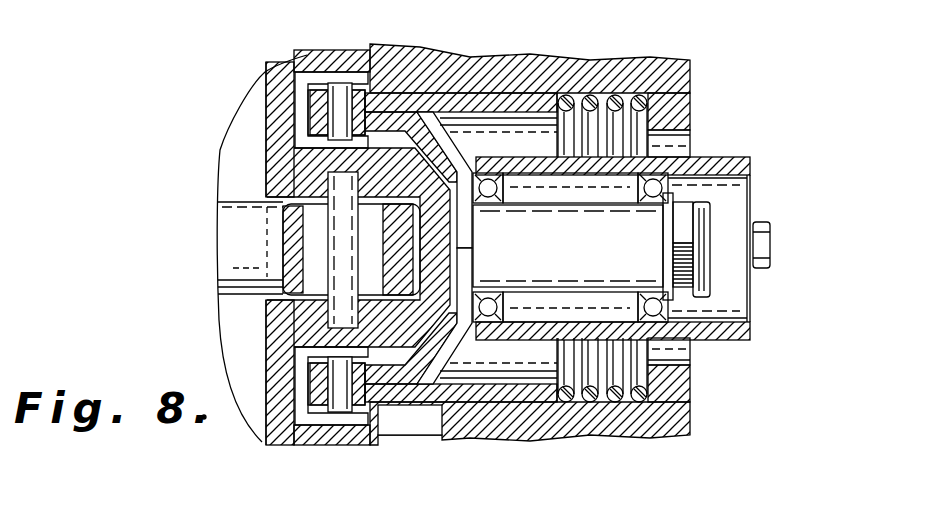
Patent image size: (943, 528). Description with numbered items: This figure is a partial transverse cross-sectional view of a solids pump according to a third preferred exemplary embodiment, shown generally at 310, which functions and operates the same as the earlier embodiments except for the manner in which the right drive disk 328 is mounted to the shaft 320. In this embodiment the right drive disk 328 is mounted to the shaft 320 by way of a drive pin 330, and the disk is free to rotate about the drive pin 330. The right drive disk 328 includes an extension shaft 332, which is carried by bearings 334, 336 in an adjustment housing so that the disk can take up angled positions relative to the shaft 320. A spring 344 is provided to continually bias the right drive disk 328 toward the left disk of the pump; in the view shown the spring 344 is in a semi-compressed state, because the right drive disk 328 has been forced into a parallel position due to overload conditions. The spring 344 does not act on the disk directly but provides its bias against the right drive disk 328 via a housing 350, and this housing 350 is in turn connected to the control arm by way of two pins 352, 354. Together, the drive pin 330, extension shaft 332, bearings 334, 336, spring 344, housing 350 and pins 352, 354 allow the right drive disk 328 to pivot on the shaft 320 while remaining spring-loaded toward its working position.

The third preferred exemplary embodiment 310 is at (632, 48).
The shaft 320 is at (232, 256).
The right drive disk 328 is at (293, 44).
The drive pin 330 is at (333, 237).
The extension shaft 332 is at (648, 236).
The bearing 334 is at (628, 284).
The bearing 336 is at (500, 315).
The spring 344 is at (641, 402).
The housing 350 is at (403, 92).
The pin 352 is at (348, 84).
The pin 354 is at (342, 416).